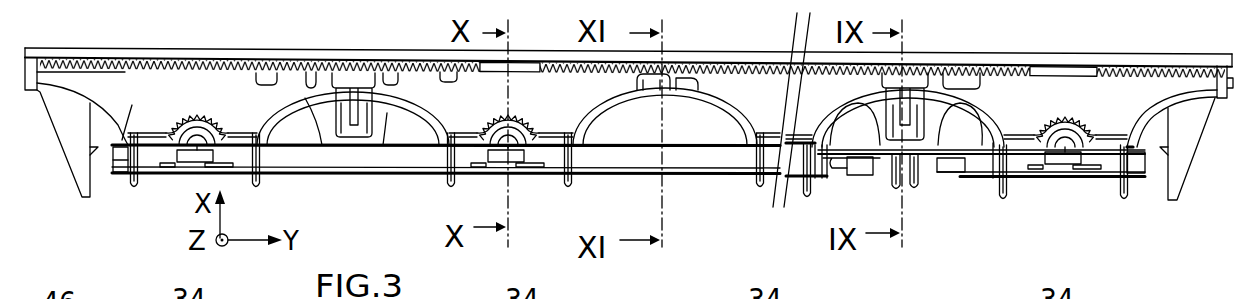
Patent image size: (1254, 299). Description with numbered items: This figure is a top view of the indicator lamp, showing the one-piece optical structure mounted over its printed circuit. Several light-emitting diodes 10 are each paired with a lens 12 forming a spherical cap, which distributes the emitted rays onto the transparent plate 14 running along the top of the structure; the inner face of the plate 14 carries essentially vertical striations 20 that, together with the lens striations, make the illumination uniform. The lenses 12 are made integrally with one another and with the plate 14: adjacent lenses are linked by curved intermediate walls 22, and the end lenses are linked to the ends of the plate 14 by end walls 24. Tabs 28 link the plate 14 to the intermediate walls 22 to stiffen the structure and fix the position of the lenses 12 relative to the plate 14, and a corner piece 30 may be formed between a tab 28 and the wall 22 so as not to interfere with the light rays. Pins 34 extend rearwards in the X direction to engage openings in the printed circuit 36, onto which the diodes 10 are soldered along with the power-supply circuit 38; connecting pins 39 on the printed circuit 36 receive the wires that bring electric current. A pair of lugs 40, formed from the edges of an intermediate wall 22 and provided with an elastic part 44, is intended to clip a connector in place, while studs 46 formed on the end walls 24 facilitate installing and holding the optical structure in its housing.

The light-emitting diode 10 is at (197, 148).
The lens 12 is at (205, 117).
The transparent plate 14 is at (746, 55).
The striations 20 is at (278, 78).
The intermediate wall 22 is at (588, 112).
The end wall 24 is at (117, 110).
The tab 28 is at (693, 88).
The corner piece 30 is at (637, 90).
The pin 34 is at (132, 188).
The printed circuit 36 is at (360, 175).
The power-supply circuit 38 is at (947, 172).
The connecting pin 39 is at (913, 185).
The lug 40 is at (375, 120).
The elastic part 44 is at (354, 120).
The stud 46 is at (80, 165).